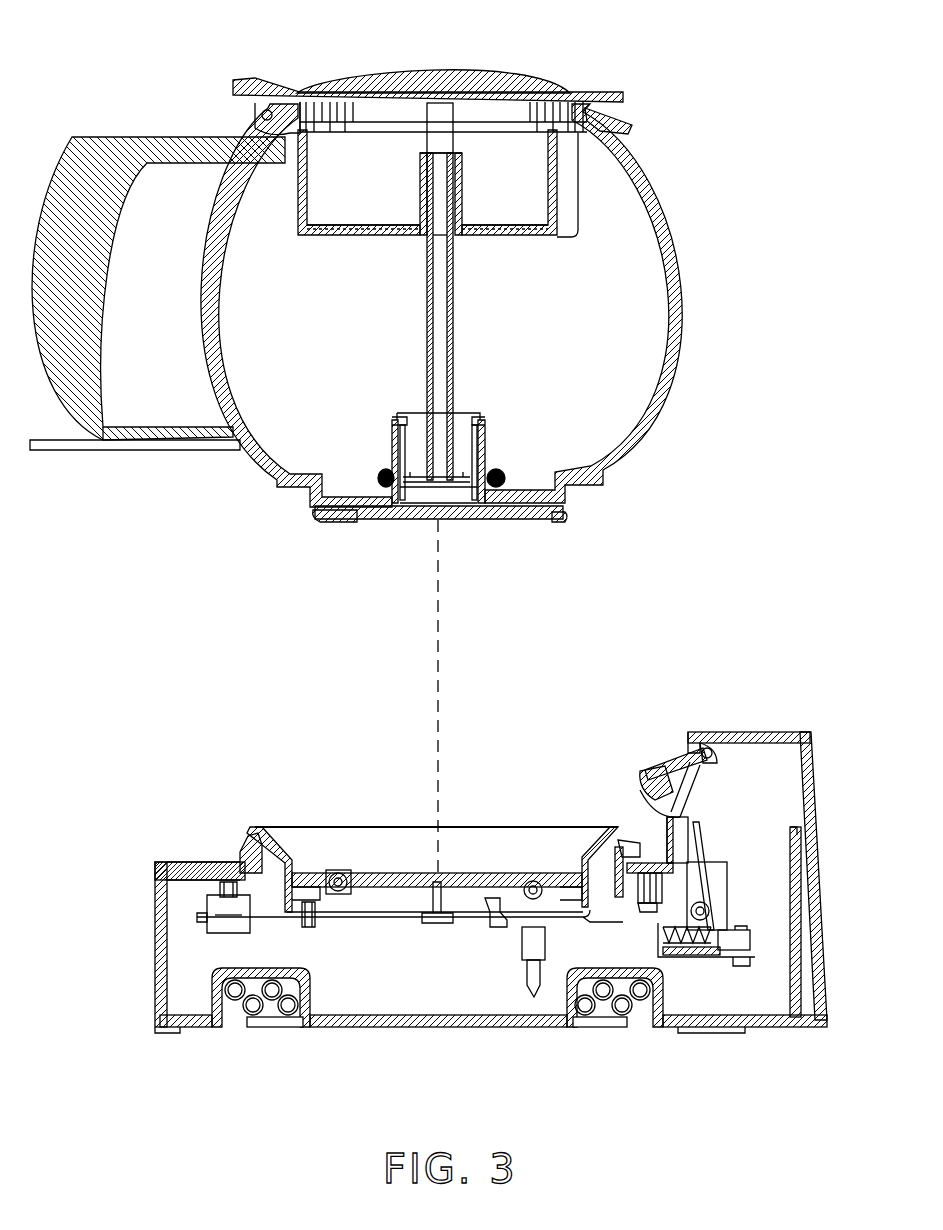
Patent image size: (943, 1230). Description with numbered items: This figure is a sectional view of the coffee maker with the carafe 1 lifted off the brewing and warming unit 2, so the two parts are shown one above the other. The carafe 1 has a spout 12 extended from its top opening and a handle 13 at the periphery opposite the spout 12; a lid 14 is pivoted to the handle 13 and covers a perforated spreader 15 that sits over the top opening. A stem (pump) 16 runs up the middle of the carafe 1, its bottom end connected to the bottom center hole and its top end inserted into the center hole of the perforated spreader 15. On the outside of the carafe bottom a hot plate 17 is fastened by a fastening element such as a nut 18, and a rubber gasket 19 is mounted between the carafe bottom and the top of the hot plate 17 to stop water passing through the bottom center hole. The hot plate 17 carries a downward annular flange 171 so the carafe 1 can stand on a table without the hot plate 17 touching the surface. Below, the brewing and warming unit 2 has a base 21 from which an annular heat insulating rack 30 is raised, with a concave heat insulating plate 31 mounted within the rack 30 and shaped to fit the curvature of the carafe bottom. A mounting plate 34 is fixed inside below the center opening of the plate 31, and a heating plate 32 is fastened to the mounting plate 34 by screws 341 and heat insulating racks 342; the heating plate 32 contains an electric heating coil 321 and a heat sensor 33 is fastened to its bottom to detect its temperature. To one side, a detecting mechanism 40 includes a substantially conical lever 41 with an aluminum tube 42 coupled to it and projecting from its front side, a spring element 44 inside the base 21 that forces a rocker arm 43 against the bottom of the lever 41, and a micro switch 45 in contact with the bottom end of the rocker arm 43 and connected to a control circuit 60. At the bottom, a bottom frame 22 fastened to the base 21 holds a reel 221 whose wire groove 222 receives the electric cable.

The carafe 1 is at (687, 238).
The spout 12 is at (627, 118).
The handle 13 is at (83, 400).
The lid 14 is at (455, 85).
The perforated spreader 15 is at (340, 228).
The stem (pump) 16 is at (453, 307).
The hot plate 17 is at (425, 517).
The downward annular flange 171 is at (317, 520).
The nut 18 is at (498, 470).
The rubber gasket 19 is at (503, 520).
The brewing and warming unit 2 is at (798, 723).
The base 21 is at (815, 835).
The bottom frame 22 is at (775, 1025).
The reel 221 is at (613, 1020).
The wire groove 222 is at (585, 1007).
The annular heat insulating rack 30 is at (240, 853).
The concave heat insulating plate 31 is at (272, 847).
The heating plate 32 is at (375, 882).
The electric heating coil 321 is at (338, 870).
The heat sensor 33 is at (495, 907).
The mounting plate 34 is at (385, 925).
The screws 341 is at (307, 920).
The heat insulating racks 342 is at (205, 905).
The detecting mechanism 40 is at (652, 757).
The conical lever 41 is at (675, 767).
The aluminum tube 42 is at (640, 780).
The rocker arm 43 is at (717, 840).
The spring element 44 is at (682, 947).
The micro switch 45 is at (730, 943).
The control circuit 60 is at (800, 928).